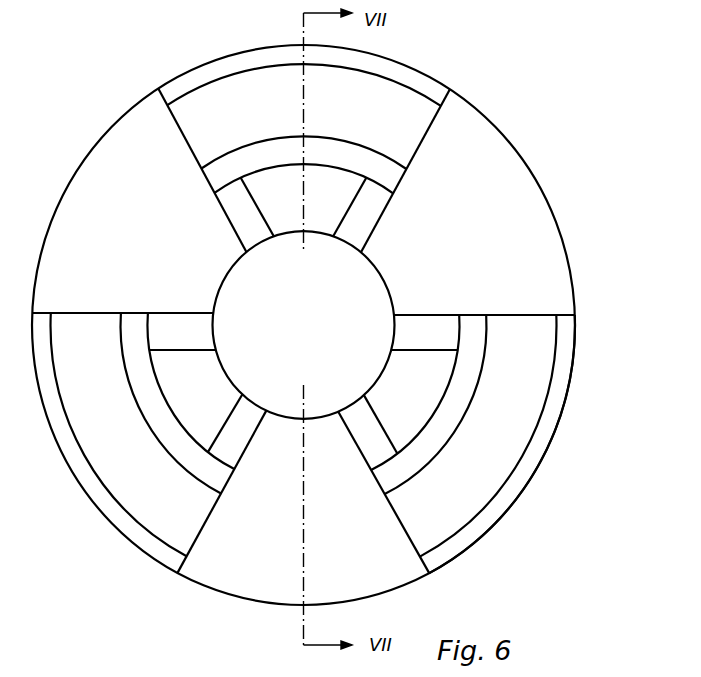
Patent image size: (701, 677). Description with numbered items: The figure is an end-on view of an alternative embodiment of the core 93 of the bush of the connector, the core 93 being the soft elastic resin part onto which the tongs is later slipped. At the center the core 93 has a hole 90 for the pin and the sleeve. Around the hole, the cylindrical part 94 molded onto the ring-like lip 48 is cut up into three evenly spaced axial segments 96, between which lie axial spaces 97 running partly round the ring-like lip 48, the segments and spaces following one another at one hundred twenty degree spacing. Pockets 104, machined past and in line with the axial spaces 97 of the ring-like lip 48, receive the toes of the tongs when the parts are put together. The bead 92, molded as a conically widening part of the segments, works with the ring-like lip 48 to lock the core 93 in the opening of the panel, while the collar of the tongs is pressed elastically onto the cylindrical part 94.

The core 93 is at (520, 103).
The pocket 104 is at (507, 212).
The axial space 97 is at (452, 249).
The hole 90 is at (286, 357).
The axial segment 96 is at (428, 397).
The bead 92 is at (465, 363).
The ring-like lip 48 is at (478, 488).
The cylindrical part 94 is at (508, 522).